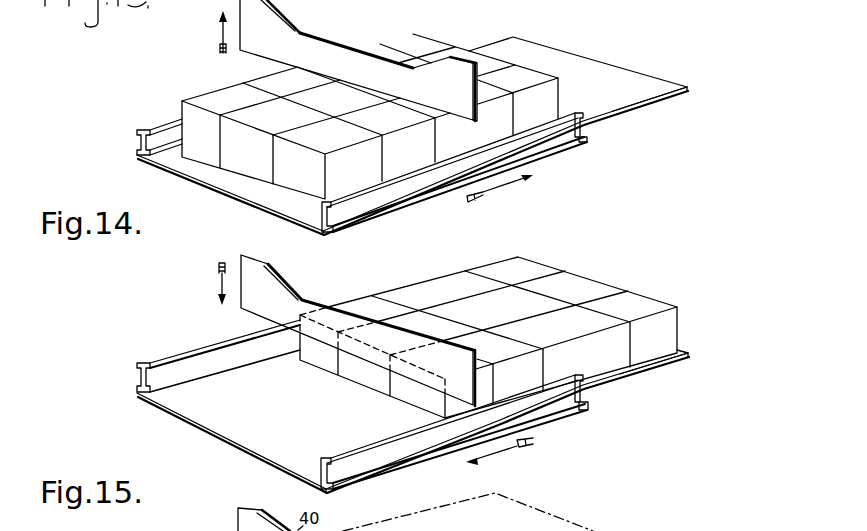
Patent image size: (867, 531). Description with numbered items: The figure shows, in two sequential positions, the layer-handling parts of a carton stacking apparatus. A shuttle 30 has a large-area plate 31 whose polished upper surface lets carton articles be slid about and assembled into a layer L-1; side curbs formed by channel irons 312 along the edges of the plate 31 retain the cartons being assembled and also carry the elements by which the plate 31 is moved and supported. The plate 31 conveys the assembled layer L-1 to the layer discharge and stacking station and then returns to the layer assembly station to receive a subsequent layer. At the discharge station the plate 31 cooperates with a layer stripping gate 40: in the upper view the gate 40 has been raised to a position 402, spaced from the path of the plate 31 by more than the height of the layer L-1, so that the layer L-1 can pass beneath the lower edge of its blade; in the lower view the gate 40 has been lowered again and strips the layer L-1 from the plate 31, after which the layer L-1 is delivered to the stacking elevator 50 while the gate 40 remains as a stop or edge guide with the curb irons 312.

In FIG. 14, the shuttle 30 is at (412, 136).
In FIG. 15, the shuttle 30 is at (404, 421).
In FIG. 14, the plate 31 is at (412, 136).
In FIG. 15, the plate 31 is at (413, 421).
In FIG. 14, the channel irons 312 is at (167, 137).
In FIG. 15, the channel irons 312 is at (195, 363).
In FIG. 14, the layer stripping gate 40 is at (358, 60).
In FIG. 15, the layer stripping gate 40 is at (330, 282).
In FIG. 14, the raised position of the blade 402 is at (340, 45).
In FIG. 14, the stacking elevator 50 is at (615, 95).
In FIG. 15, the stacking elevator 50 is at (636, 376).
In FIG. 14, the layer L-1 is at (230, 95).
In FIG. 15, the layer L-1 is at (565, 285).